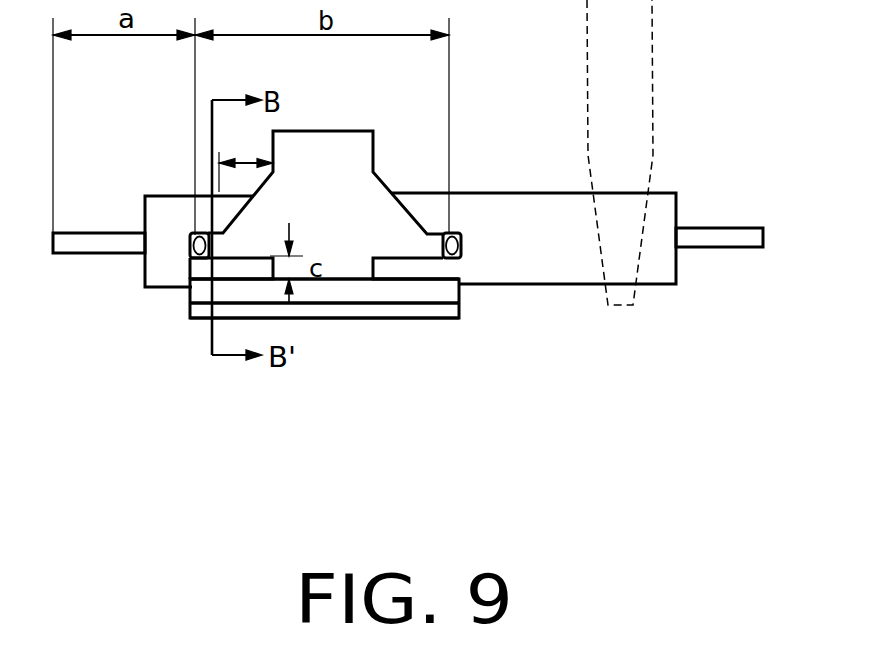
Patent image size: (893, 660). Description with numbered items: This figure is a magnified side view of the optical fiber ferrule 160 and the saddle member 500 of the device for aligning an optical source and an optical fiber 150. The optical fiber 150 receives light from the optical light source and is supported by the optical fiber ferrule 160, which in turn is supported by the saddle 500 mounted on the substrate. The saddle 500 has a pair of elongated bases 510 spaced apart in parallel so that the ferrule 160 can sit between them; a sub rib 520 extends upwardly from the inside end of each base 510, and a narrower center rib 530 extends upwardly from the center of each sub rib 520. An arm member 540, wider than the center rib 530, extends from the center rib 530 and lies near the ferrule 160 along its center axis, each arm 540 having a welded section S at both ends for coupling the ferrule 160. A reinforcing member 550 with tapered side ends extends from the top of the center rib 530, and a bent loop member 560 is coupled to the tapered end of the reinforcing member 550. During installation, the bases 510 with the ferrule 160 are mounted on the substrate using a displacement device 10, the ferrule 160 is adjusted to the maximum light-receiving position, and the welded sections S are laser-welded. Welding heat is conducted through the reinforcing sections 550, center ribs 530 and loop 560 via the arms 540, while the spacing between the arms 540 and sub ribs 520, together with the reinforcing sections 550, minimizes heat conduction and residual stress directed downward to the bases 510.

The displacement device 10 is at (650, 70).
The optical fiber 150 is at (704, 224).
The optical fiber ferrule 160 is at (575, 273).
The saddle member 500 is at (309, 337).
The elongated base 510 is at (436, 307).
The sub rib 520 is at (222, 290).
The center rib 530 is at (331, 270).
The arm member 540 is at (410, 243).
The reinforcing member 550 is at (257, 218).
The loop member 560 is at (343, 143).
The welded section S is at (451, 233).